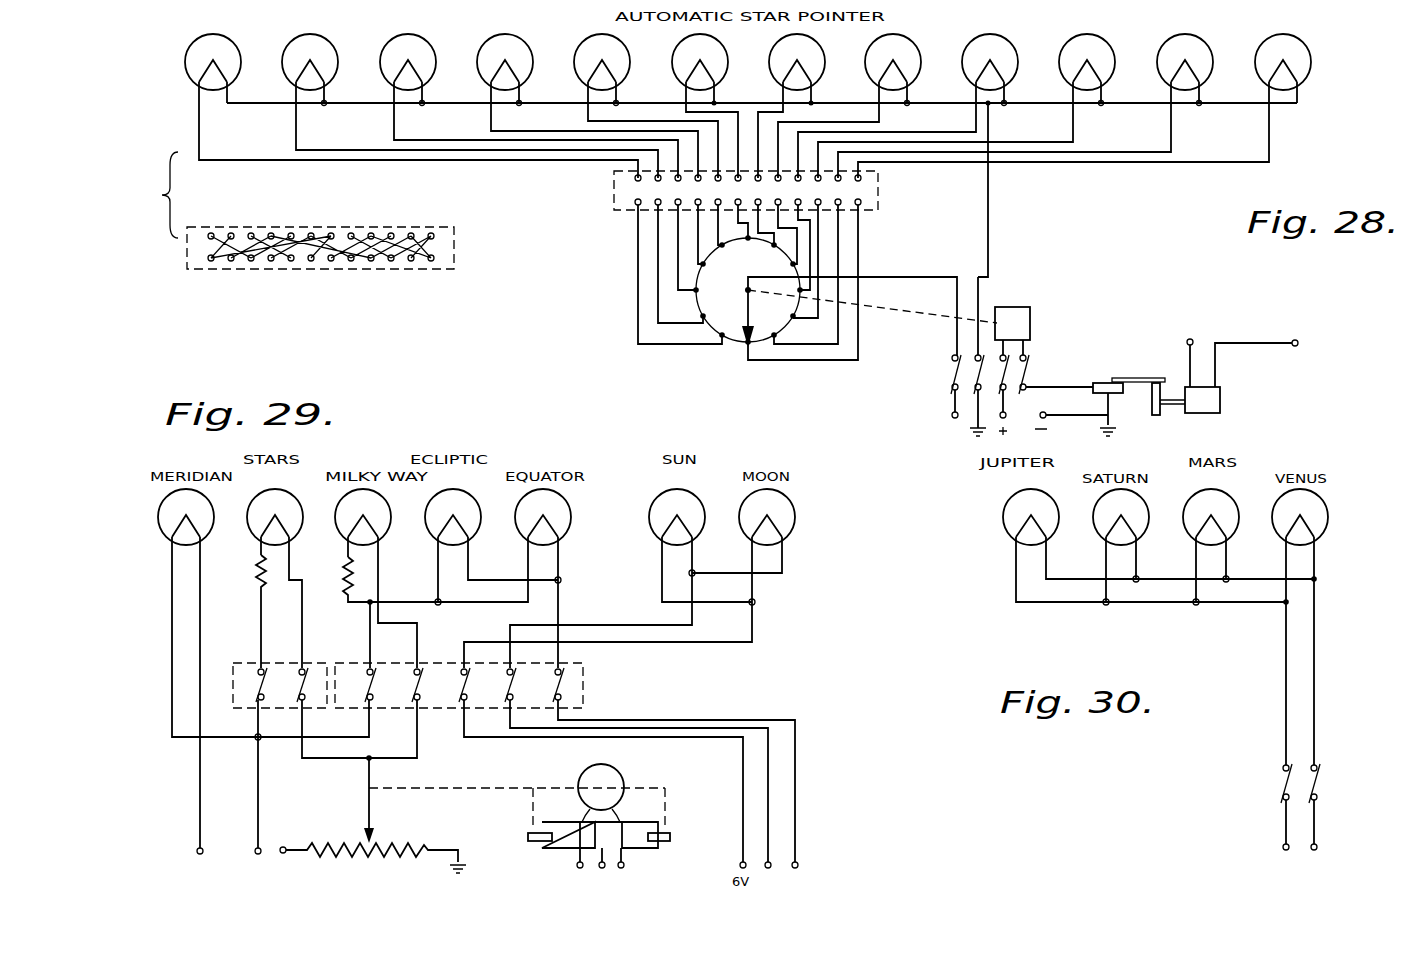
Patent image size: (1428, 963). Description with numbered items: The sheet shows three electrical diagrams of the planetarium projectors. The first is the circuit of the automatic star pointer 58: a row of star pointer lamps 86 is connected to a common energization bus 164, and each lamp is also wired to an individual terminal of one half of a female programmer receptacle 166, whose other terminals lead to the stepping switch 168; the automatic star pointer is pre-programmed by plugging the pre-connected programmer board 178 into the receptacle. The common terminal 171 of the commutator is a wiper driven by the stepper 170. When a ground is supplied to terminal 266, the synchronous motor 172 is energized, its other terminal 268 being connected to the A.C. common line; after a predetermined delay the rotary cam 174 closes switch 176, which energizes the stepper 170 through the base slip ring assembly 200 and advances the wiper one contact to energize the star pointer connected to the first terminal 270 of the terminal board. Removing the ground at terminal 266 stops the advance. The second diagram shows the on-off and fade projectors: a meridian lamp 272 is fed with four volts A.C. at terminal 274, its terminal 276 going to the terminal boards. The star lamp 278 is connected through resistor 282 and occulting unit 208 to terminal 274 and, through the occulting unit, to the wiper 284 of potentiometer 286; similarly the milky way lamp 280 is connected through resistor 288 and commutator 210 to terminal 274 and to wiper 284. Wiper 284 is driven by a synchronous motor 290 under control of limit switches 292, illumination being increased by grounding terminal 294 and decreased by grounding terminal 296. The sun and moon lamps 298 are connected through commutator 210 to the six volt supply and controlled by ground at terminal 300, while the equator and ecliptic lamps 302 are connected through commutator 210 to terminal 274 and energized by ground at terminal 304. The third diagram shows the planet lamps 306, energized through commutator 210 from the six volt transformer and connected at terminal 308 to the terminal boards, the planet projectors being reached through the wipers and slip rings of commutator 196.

In FIG. 28, the lamp 86 is at (497, 36).
In FIG. 28, the common energization bus 164 is at (1135, 105).
In FIG. 28, the female programmer receptacle 166 is at (878, 190).
In FIG. 28, the stepping switch 168 is at (870, 262).
In FIG. 28, the stepper 170 is at (1013, 308).
In FIG. 28, the common terminal 171 is at (741, 312).
In FIG. 28, the synchronous motor 172 is at (1221, 400).
In FIG. 28, the rotary cam 174 is at (1153, 417).
In FIG. 28, the switch 176 is at (1099, 383).
In FIG. 28, the programmer board 178 is at (396, 228).
In FIG. 28, the base slip ring assembly 200 is at (936, 393).
In FIG. 28, the terminal 266 is at (1298, 340).
In FIG. 28, the terminal 268 is at (1194, 338).
In FIG. 28, the first terminal 270 is at (636, 205).
In FIG. 28, the automatic star pointer 58 is at (594, 206).
In FIG. 29, the meridian lamp 272 is at (160, 528).
In FIG. 29, the terminal 274 is at (255, 848).
In FIG. 29, the terminal 276 is at (198, 852).
In FIG. 29, the star lamp 278 is at (248, 527).
In FIG. 29, the milky way lamp 280 is at (393, 528).
In FIG. 29, the resistor 282 is at (262, 572).
In FIG. 29, the wiper 284 is at (368, 810).
In FIG. 29, the potentiometer 286 is at (404, 830).
In FIG. 29, the resistor 288 is at (348, 573).
In FIG. 29, the synchronous motor 290 is at (620, 775).
In FIG. 29, the limit switches 292 is at (530, 837).
In FIG. 29, the terminal 294 is at (606, 868).
In FIG. 29, the terminal 296 is at (625, 866).
In FIG. 29, the sun and moon lamps 298 is at (744, 540).
In FIG. 29, the terminal 300 is at (772, 868).
In FIG. 29, the equator and ecliptic lamps 302 is at (478, 531).
In FIG. 29, the terminal 304 is at (800, 866).
In FIG. 29, the occulting unit 208 is at (233, 678).
In FIG. 29, the commutator 210 is at (585, 683).
In FIG. 30, the commutator 196 is at (1282, 776).
In FIG. 30, the planet lamps 306 is at (1339, 523).
In FIG. 30, the terminal 308 is at (1317, 848).